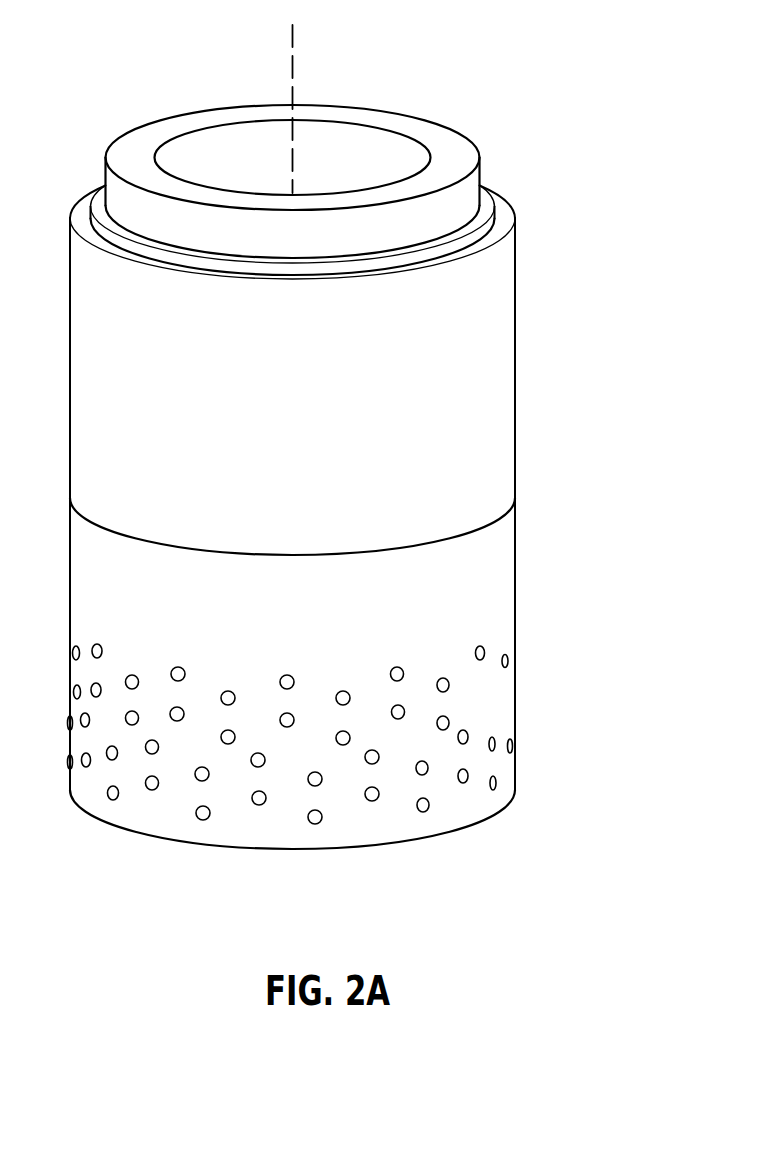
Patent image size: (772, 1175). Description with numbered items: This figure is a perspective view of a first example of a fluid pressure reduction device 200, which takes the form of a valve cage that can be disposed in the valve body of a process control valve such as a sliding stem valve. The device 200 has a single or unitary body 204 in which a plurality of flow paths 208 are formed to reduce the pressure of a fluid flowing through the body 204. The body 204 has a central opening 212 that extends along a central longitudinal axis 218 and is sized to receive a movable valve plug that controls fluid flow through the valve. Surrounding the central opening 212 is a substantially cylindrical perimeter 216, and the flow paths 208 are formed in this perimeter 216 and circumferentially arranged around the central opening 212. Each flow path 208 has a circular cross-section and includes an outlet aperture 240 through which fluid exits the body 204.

The fluid pressure reduction device 200 is at (359, 463).
The unitary body 204 is at (483, 405).
The flow paths 208 is at (327, 700).
The central opening 212 is at (325, 160).
The substantially cylindrical perimeter 216 is at (315, 166).
The central longitudinal axis 218 is at (293, 57).
The outlet aperture 240 is at (485, 650).